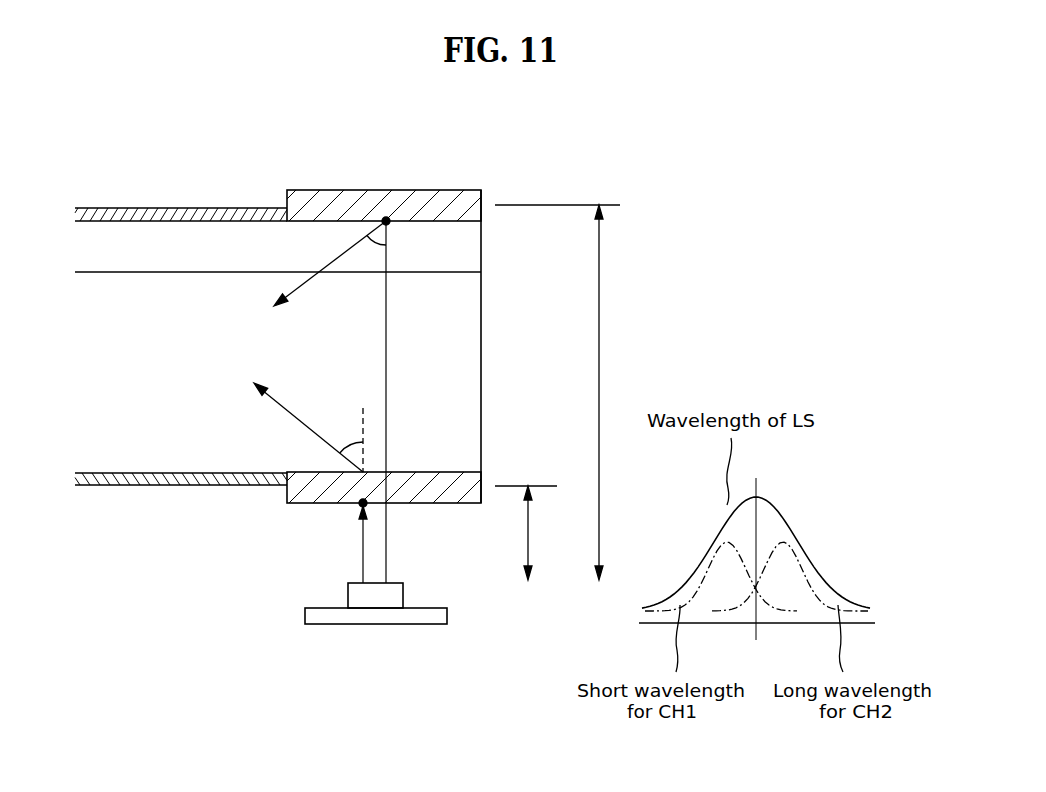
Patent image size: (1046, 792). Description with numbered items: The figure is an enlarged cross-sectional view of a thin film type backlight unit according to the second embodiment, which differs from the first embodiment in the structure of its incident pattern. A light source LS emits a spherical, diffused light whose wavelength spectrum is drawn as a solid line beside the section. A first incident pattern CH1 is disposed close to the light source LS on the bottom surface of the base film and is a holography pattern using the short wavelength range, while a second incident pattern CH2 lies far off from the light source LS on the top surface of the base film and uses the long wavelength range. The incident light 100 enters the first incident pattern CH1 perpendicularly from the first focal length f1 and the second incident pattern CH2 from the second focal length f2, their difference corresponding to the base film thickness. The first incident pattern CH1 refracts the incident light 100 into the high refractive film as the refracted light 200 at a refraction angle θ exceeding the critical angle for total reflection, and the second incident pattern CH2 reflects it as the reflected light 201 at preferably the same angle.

The incident light 100 is at (359, 538).
The refracted light 200 is at (287, 409).
The reflected light 201 is at (301, 293).
The first incident pattern CH1 is at (313, 500).
The second incident pattern CH2 is at (314, 193).
The light source LS is at (402, 590).
The first focal length f1 is at (526, 533).
The second focal length f2 is at (557, 392).